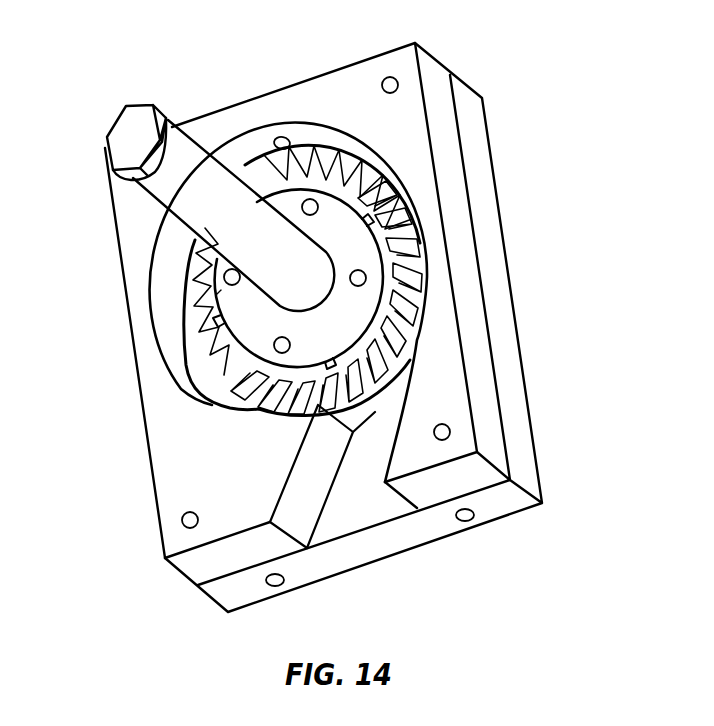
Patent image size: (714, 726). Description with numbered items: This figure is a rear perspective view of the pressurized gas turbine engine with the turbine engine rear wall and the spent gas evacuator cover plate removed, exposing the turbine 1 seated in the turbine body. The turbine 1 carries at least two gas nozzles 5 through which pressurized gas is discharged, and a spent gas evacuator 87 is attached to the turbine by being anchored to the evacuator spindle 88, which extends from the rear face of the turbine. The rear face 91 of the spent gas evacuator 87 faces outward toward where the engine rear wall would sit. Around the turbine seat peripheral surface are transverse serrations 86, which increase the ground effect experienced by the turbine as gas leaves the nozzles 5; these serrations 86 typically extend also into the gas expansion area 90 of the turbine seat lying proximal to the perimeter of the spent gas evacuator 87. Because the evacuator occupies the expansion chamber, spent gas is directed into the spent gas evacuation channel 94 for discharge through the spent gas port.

The turbine 1 is at (373, 390).
The gas nozzles 5 is at (340, 412).
The transverse serrations 86 is at (210, 405).
The spent gas evacuator 87 is at (378, 198).
The evacuator spindle 88 is at (347, 252).
The gas expansion area 90 is at (225, 362).
The rear face 91 is at (220, 310).
The spent gas evacuation channel 94 is at (371, 510).